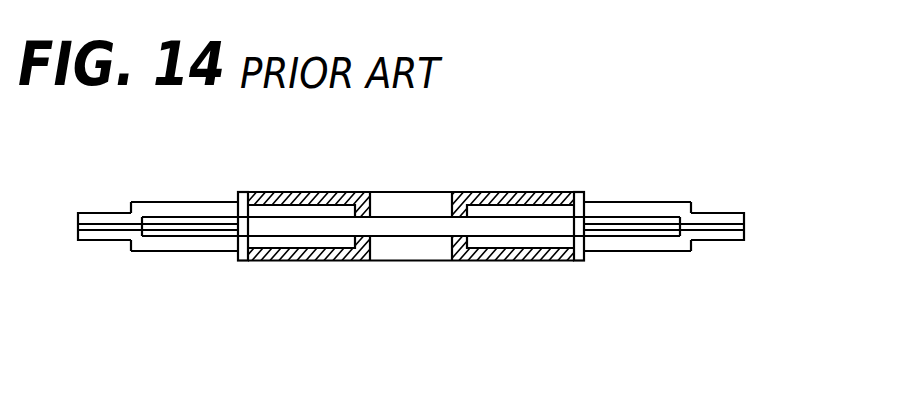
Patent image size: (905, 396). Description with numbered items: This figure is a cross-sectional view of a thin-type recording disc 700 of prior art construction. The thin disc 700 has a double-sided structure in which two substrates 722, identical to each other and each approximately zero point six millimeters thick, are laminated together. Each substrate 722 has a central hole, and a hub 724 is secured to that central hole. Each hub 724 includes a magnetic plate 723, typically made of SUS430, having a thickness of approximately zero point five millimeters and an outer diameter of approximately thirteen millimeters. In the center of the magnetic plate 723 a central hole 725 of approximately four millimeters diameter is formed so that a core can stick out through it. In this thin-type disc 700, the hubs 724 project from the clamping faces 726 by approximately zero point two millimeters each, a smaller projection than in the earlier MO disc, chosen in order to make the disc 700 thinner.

The thin-type disc 700 is at (840, 372).
The substrate 722 is at (110, 213).
The magnetic plate 723 is at (498, 192).
The hub 724 is at (582, 192).
The central hole 725 is at (405, 260).
The clamping face 726 is at (186, 202).